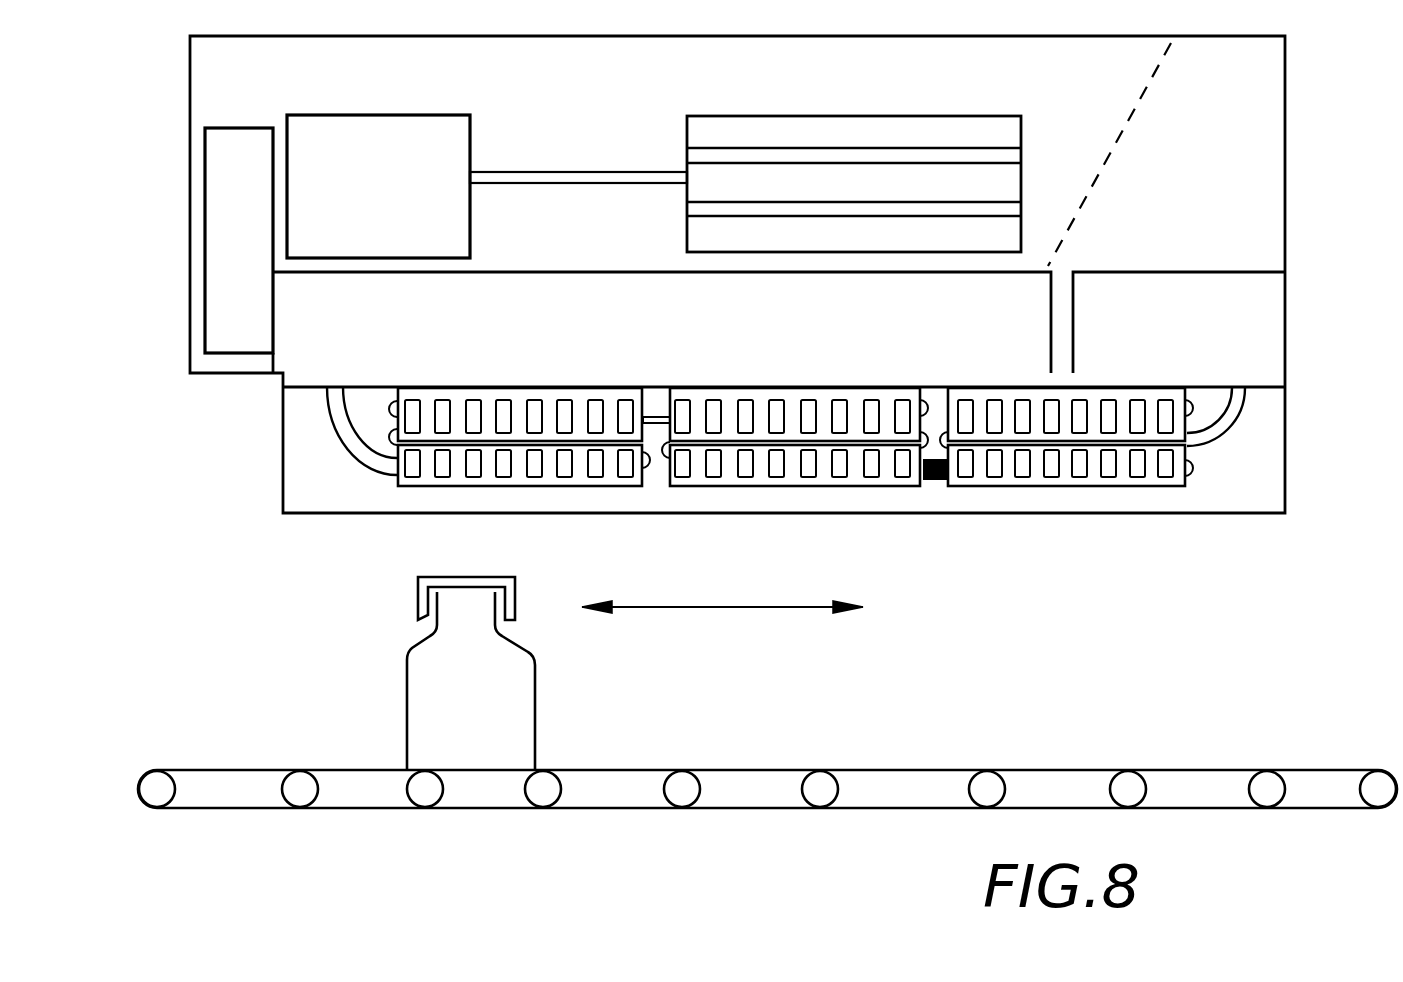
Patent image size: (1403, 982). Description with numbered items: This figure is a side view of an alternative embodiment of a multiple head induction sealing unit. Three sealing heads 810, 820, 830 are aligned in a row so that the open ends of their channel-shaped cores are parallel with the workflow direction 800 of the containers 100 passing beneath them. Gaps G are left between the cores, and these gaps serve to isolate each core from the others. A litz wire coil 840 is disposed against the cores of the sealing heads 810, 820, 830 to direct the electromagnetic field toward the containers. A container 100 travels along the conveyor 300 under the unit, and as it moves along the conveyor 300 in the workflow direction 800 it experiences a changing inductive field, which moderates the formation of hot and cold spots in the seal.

The container 100 is at (432, 693).
The conveyor 300 is at (197, 778).
The workflow direction 800 is at (758, 608).
The sealing head 810 is at (425, 487).
The sealing head 820 is at (808, 487).
The sealing head 830 is at (1163, 488).
The litz wire coil 840 is at (347, 448).
The gap G is at (653, 486).